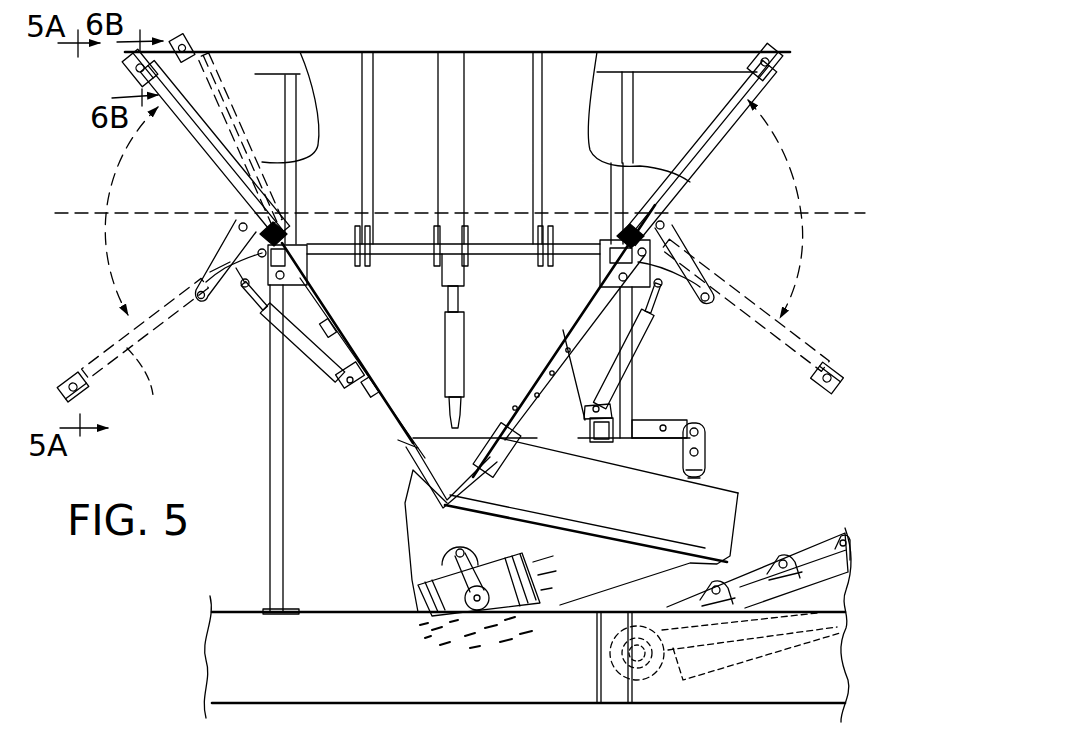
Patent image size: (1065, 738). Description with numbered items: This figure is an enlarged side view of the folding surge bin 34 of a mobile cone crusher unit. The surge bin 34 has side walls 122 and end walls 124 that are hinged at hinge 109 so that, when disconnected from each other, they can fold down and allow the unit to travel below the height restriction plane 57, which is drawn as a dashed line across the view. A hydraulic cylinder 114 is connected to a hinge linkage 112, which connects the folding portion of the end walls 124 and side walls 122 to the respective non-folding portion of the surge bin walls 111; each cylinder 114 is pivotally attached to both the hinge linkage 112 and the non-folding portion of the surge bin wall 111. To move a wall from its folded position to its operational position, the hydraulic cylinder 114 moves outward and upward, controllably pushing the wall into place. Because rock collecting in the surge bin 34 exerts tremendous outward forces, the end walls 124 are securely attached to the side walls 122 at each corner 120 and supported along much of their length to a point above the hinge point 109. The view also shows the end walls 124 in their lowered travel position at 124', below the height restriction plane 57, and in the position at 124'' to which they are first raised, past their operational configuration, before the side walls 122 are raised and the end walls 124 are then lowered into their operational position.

The surge bin 34 is at (397, 52).
The height restriction plane 57 is at (793, 206).
The hinge 109 is at (280, 229).
The non-folding portion of the surge bin walls 111 is at (526, 329).
The hinge linkage 112 is at (230, 251).
The hydraulic cylinder 114 is at (302, 343).
The corner 120 is at (122, 75).
The side walls 122 is at (269, 102).
The end walls 124 is at (473, 232).
The lowered position of end walls 124' is at (132, 355).
The raised position of end walls past operational configuration 124'' is at (506, 202).